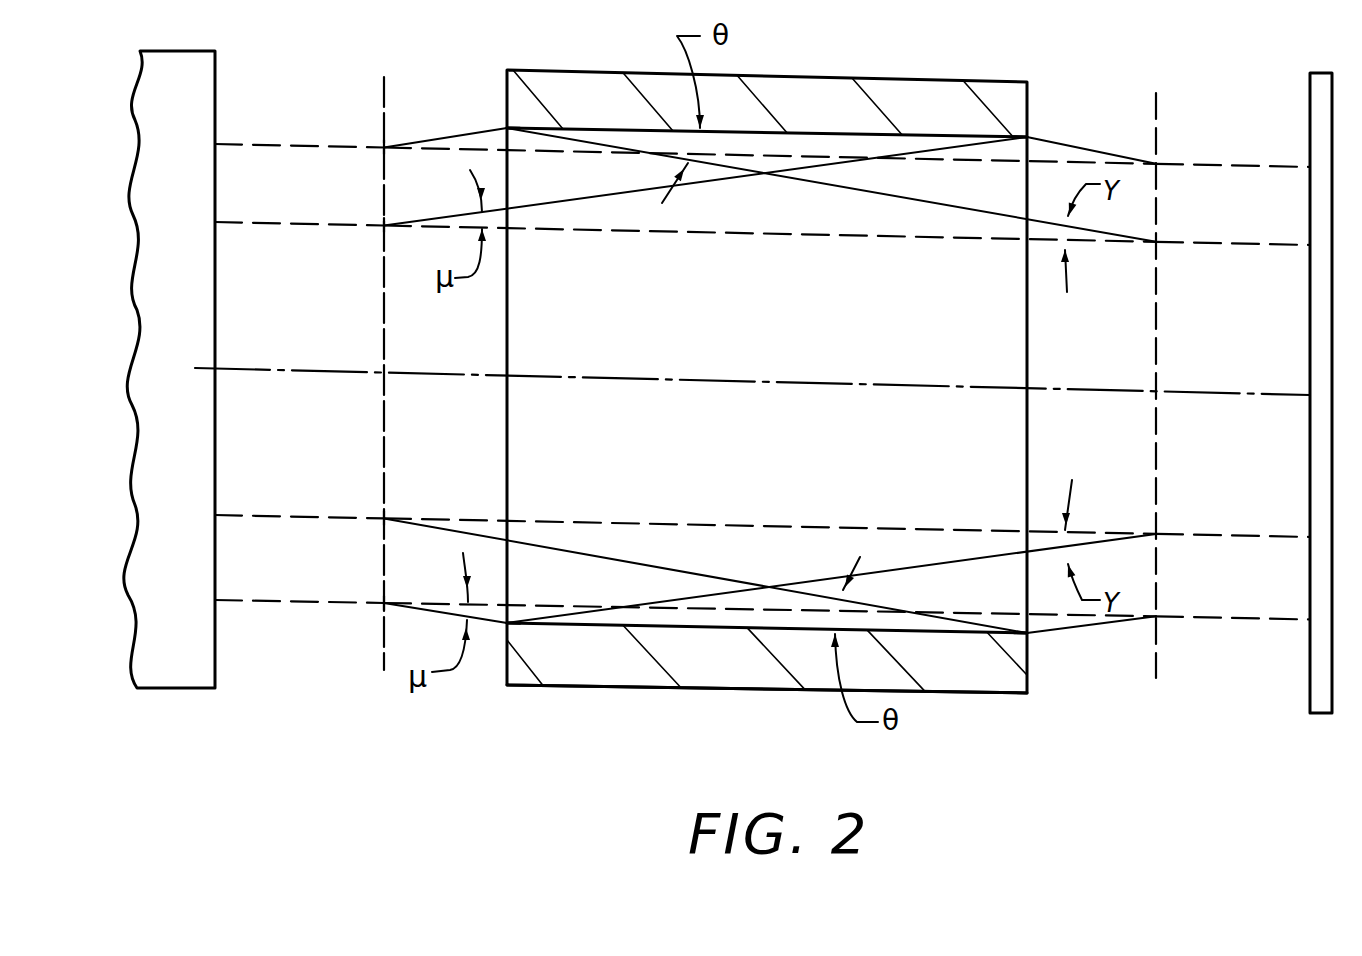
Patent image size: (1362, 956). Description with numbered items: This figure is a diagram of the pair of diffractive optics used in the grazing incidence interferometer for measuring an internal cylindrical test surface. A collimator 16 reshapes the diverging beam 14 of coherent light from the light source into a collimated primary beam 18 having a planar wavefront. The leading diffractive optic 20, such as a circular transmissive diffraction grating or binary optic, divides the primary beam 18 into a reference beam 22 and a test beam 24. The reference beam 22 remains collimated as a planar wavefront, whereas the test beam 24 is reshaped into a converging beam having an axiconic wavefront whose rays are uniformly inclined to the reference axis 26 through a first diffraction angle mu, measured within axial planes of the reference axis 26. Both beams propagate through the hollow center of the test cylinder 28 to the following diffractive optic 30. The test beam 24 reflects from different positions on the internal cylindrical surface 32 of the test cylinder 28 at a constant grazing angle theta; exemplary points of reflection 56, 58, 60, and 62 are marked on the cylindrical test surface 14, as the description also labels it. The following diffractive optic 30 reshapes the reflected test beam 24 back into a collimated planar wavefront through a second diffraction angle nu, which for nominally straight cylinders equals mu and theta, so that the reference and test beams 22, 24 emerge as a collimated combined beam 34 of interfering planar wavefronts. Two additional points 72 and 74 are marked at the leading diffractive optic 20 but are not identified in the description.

The diverging beam 14 is at (808, 136).
The collimator 16 is at (205, 100).
The collimated primary beam 18 is at (290, 222).
The leading diffractive optic 20 is at (384, 298).
The reference beam 22 is at (735, 236).
The test beam 24 is at (897, 199).
The reference axis 26 is at (906, 384).
The test cylinder 28 is at (980, 694).
The following diffractive optic 30 is at (1155, 333).
The internal cylindrical surface 32 is at (910, 633).
The collimated combined beam 34 is at (1202, 246).
The point of reflection 56 is at (513, 131).
The point of reflection 58 is at (1018, 138).
The point of reflection 60 is at (507, 622).
The point of reflection 62 is at (1026, 633).
The inner ray entry point 72 is at (384, 224).
The outer ray entry point 74 is at (384, 147).